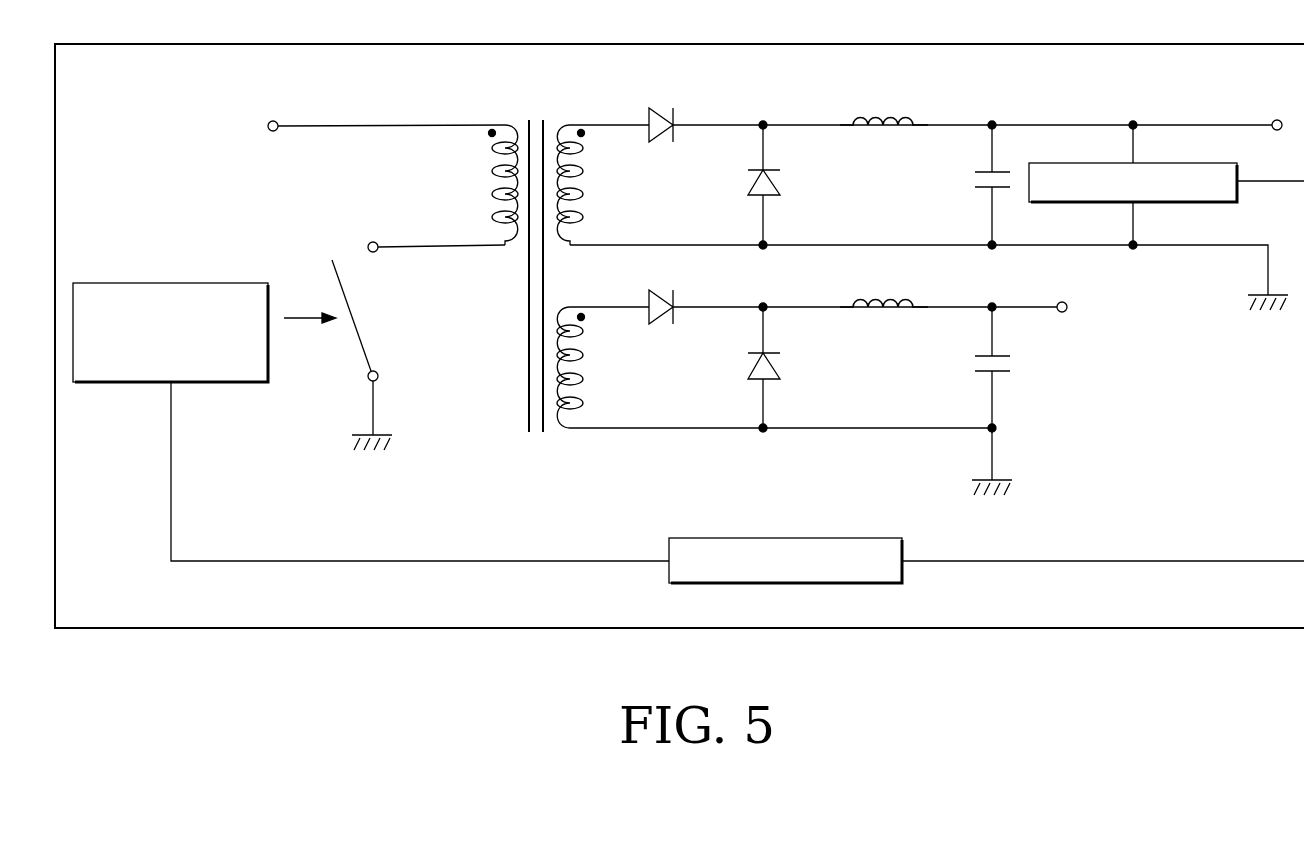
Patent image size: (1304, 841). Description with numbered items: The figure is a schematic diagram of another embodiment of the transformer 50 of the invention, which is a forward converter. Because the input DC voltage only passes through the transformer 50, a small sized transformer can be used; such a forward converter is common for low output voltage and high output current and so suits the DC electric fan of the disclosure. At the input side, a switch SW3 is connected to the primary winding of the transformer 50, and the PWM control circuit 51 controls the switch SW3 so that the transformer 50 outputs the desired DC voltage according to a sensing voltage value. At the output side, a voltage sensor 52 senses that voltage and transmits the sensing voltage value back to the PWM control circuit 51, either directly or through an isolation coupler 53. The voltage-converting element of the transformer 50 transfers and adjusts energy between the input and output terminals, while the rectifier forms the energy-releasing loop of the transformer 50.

The transformer 50 is at (700, 44).
The PWM control circuit 51 is at (172, 283).
The voltage sensor 52 is at (1213, 163).
The isolation coupler 53 is at (785, 538).
The switch SW3 is at (397, 330).